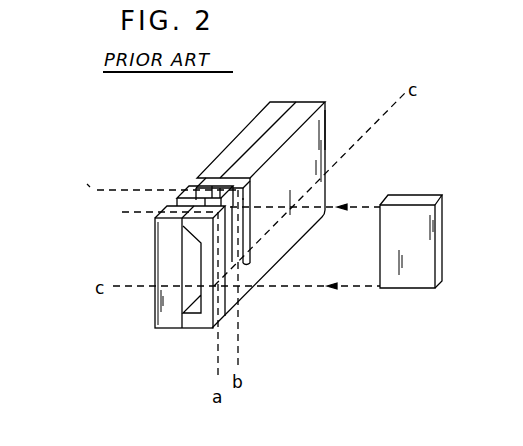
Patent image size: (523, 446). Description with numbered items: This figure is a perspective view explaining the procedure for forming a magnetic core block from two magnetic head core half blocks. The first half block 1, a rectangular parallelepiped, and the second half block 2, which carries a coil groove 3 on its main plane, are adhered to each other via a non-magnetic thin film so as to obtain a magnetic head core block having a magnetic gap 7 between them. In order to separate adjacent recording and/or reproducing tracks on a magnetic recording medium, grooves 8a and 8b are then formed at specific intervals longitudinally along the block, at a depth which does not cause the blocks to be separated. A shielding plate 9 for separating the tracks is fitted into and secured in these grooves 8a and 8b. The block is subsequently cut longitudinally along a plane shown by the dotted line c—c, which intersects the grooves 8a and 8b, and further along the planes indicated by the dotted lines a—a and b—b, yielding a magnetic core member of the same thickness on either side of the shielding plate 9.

The first half block of the magnetic head core 1 is at (248, 122).
The second half block of the magnetic head core 2 is at (327, 128).
The coil groove 3 is at (193, 310).
The magnetic gap 7 is at (287, 112).
The groove 8a is at (186, 196).
The groove 8b is at (200, 183).
The shielding plate 9 is at (420, 280).